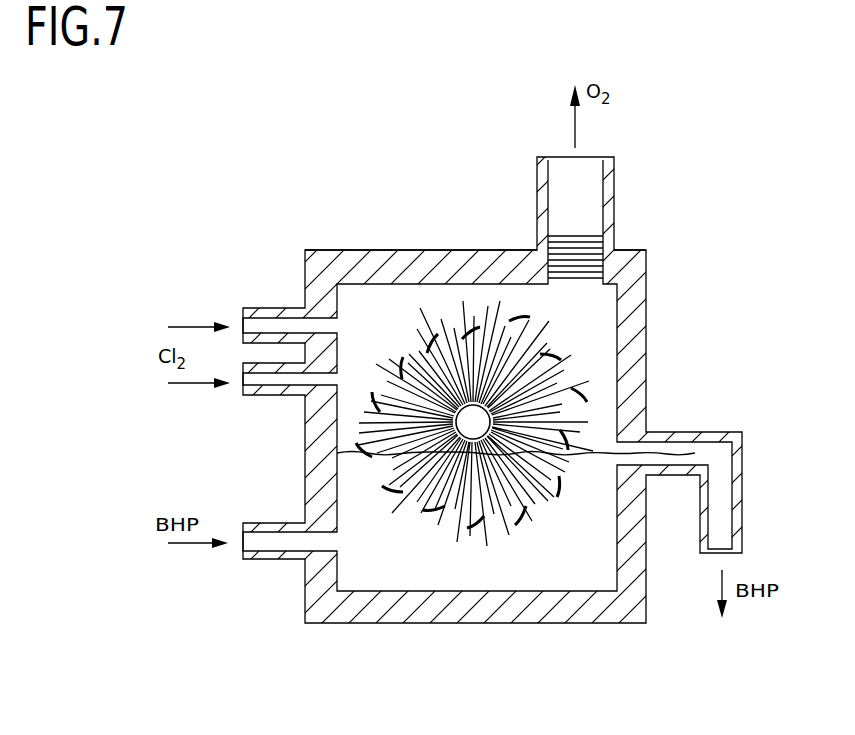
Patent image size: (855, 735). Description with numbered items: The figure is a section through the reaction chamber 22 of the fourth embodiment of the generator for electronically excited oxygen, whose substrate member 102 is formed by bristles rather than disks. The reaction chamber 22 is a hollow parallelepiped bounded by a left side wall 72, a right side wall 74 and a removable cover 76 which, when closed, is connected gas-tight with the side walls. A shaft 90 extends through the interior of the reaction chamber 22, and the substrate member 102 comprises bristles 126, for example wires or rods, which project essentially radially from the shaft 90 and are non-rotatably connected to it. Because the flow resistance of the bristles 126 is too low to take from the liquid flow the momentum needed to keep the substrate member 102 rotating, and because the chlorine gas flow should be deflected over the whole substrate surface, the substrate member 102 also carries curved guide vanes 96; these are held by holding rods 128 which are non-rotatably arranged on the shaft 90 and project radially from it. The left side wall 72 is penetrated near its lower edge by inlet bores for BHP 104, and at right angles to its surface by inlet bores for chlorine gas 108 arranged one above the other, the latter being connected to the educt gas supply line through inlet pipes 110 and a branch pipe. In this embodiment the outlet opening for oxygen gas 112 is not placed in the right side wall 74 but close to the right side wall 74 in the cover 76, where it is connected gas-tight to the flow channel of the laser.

The reaction chamber 22 is at (664, 632).
The left side wall 72 is at (313, 452).
The right side wall 74 is at (640, 432).
The cover 76 is at (488, 262).
The shaft 90 is at (492, 420).
The guide vanes 96 is at (427, 330).
The substrate member 102 is at (584, 396).
The inlet bores for BHP 104 is at (304, 545).
The inlet bores for chlorine gas 108 is at (300, 380).
The inlet pipes 110 is at (268, 383).
The outlet opening for oxygen gas 112 is at (599, 258).
The bristles 126 is at (558, 338).
The holding rods 128 is at (395, 375).